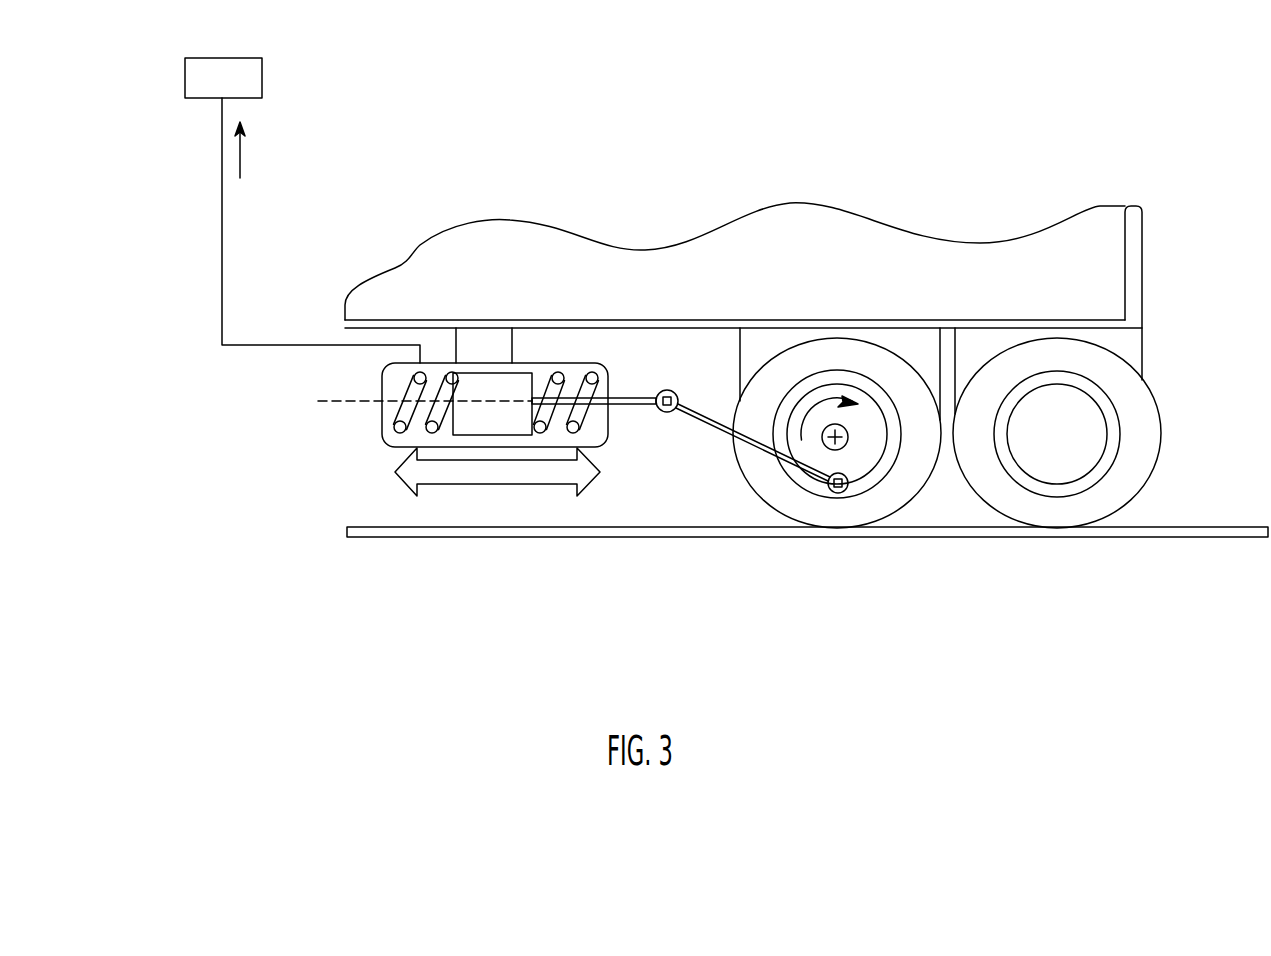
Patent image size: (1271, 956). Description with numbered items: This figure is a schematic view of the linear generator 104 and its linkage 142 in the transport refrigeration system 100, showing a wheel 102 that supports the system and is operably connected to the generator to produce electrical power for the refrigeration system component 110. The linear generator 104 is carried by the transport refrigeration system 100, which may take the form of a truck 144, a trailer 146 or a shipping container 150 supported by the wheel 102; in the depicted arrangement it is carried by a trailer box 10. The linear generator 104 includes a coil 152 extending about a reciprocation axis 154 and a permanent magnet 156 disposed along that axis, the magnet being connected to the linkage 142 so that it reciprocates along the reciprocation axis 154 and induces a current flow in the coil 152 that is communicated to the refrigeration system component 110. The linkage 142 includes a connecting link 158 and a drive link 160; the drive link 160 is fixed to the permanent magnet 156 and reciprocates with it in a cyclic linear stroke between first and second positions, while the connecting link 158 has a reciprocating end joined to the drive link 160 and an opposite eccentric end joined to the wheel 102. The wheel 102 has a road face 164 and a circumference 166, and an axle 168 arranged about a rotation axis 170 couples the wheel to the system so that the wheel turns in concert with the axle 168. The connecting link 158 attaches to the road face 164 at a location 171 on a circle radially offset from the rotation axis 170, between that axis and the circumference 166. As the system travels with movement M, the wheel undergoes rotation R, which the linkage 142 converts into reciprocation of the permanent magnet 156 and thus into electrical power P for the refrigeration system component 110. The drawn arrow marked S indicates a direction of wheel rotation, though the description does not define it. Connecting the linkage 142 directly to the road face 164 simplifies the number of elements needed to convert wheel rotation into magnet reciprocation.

The trailer box 10 is at (1142, 235).
The transport refrigeration system 100 is at (203, 700).
The wheel 102 is at (900, 493).
The linear generator 104 is at (378, 458).
The refrigeration system component 110 is at (241, 94).
The linkage 142 is at (658, 470).
The truck 144 is at (743, 294).
The trailer 146 is at (484, 345).
The shipping container 150 is at (947, 374).
The coil 152 is at (407, 406).
The reciprocation axis 154 is at (357, 402).
The permanent magnet 156 is at (503, 420).
The connecting link 158 is at (623, 393).
The drive link 160 is at (742, 398).
The road face 164 is at (850, 388).
The circumference 166 is at (900, 518).
The axle 168 is at (848, 430).
The rotation axis 170 is at (848, 443).
The location 171 is at (836, 494).
The electrical power P is at (240, 158).
The movement M is at (463, 482).
The rotation R is at (813, 402).
The steering direction S is at (830, 390).